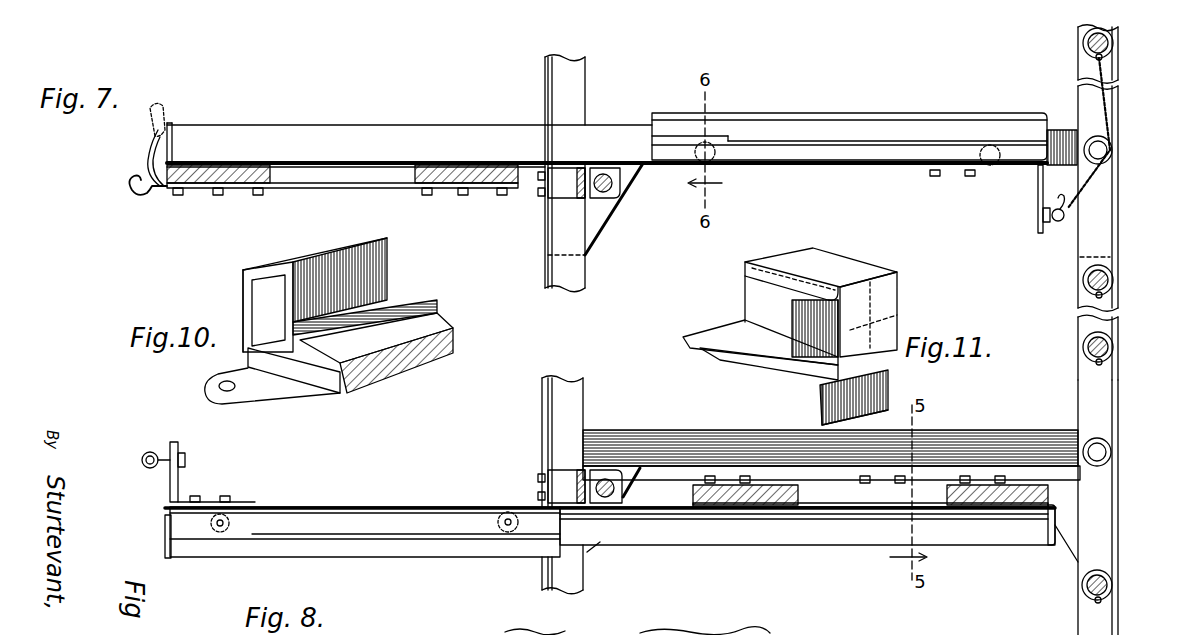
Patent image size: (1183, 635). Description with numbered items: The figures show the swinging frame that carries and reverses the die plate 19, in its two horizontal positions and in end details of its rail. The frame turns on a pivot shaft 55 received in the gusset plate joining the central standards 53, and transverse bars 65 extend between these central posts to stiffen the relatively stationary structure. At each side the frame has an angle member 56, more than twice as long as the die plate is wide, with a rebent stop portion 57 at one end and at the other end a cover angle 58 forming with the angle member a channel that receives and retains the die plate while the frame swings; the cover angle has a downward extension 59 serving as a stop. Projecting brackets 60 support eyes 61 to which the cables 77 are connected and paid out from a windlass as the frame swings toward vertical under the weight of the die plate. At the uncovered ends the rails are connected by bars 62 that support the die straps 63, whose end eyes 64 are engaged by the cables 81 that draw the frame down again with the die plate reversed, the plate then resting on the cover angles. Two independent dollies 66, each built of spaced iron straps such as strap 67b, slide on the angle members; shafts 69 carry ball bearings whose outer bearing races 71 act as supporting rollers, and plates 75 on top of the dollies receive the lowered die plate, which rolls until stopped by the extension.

In FIG. 7, the die plate 19 is at (897, 128).
In FIG. 8, the die plate 19 is at (462, 549).
In FIG. 7, the central standard 53 is at (583, 92).
In FIG. 8, the central standard 53 is at (583, 398).
In FIG. 7, the pivot shaft 55 is at (613, 190).
In FIG. 8, the pivot shaft 55 is at (615, 489).
In FIG. 7, the angle member 56 is at (471, 128).
In FIG. 10, the angle member 56 is at (335, 258).
In FIG. 11, the angle member 56 is at (755, 300).
In FIG. 8, the angle member 56 is at (700, 545).
In FIG. 7, the rebent stop portion 57 is at (172, 144).
In FIG. 10, the rebent stop portion 57 is at (258, 296).
In FIG. 8, the rebent stop portion 57 is at (1049, 537).
In FIG. 7, the cover angle 58 is at (827, 118).
In FIG. 11, the cover angle 58 is at (822, 264).
In FIG. 8, the cover angle 58 is at (386, 558).
In FIG. 7, the extension 59 is at (1044, 128).
In FIG. 11, the extension 59 is at (897, 310).
In FIG. 8, the extension 59 is at (165, 530).
In FIG. 7, the projecting bracket 60 is at (1038, 199).
In FIG. 11, the projecting bracket 60 is at (820, 404).
In FIG. 8, the projecting bracket 60 is at (180, 446).
In FIG. 7, the eye 61 is at (1058, 222).
In FIG. 8, the eye 61 is at (150, 452).
In FIG. 7, the bar 62 is at (255, 184).
In FIG. 10, the bar 62 is at (368, 382).
In FIG. 8, the bar 62 is at (776, 505).
In FIG. 7, the die strap 63 is at (360, 188).
In FIG. 10, the die strap 63 is at (268, 392).
In FIG. 8, the die strap 63 is at (874, 505).
In FIG. 7, the eye 64 is at (146, 194).
In FIG. 7, the transverse bar 65 is at (578, 190).
In FIG. 8, the transverse bar 65 is at (577, 490).
In FIG. 7, the dolly 66 is at (862, 162).
In FIG. 8, the dolly 66 is at (398, 507).
In FIG. 8, the iron strap 67b is at (322, 507).
In FIG. 8, the shaft 69 is at (220, 528).
In FIG. 8, the outer bearing race 71 is at (228, 515).
In FIG. 8, the plate 75 is at (240, 540).
In FIG. 7, the cable 77 is at (1112, 156).
In FIG. 7, the cable 81 is at (166, 110).